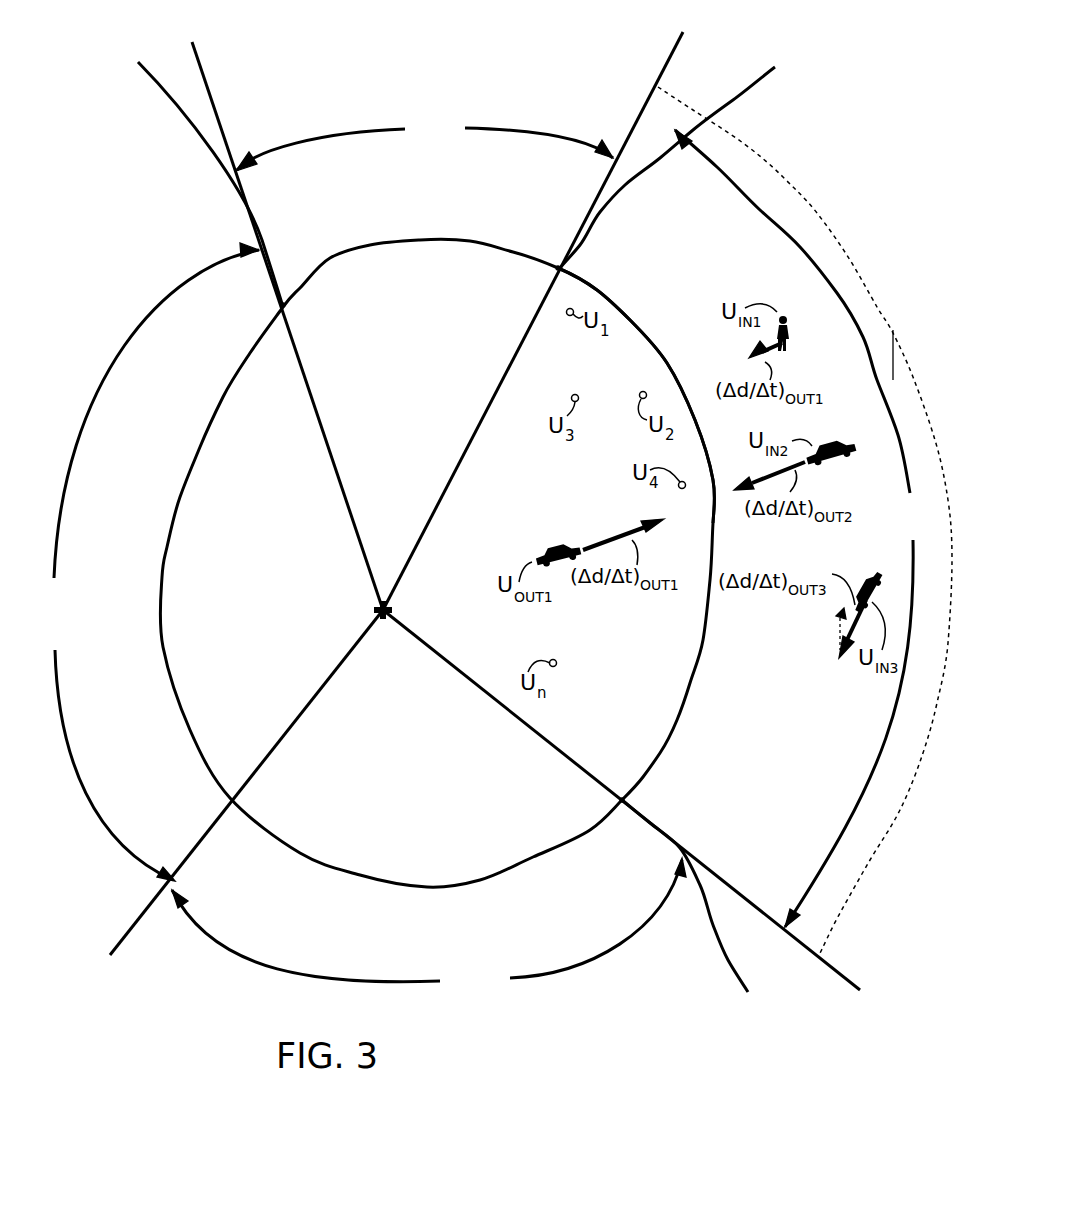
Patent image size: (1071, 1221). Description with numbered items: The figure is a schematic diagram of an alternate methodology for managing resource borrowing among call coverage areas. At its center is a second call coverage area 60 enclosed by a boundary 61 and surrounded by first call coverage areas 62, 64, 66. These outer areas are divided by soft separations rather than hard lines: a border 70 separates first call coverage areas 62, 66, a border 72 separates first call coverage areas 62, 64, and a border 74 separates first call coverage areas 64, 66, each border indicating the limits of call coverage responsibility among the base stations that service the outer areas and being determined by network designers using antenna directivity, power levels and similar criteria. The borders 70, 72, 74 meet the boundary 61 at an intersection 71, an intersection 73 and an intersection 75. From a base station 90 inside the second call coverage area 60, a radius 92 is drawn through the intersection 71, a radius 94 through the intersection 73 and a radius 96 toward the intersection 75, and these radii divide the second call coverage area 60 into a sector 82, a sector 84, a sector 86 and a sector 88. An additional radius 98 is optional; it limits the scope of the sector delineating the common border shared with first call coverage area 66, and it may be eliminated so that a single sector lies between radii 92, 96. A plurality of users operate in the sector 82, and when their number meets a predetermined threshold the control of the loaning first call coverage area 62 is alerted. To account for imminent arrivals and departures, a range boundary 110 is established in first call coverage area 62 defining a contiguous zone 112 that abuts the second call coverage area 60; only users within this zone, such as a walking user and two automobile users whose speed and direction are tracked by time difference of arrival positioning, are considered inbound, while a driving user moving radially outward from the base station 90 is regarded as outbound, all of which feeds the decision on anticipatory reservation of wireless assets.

The second call coverage area 60 is at (422, 700).
The boundary 61 is at (636, 395).
The first call coverage area 62 is at (769, 730).
The first call coverage area 64 is at (437, 198).
The first call coverage area 66 is at (126, 571).
The border 70 is at (685, 900).
The intersection 71 is at (669, 785).
The border 72 is at (667, 167).
The intersection 73 is at (598, 252).
The border 74 is at (170, 184).
The intersection 75 is at (246, 299).
The sector 82 is at (800, 528).
The sector 84 is at (424, 143).
The sector 86 is at (149, 562).
The sector 88 is at (429, 925).
The base station 90 is at (344, 595).
The radius 92 is at (621, 800).
The radius 94 is at (533, 321).
The radius 96 is at (297, 326).
The radius 98 is at (246, 782).
The range boundary 110 is at (805, 522).
The zone 112 is at (895, 377).